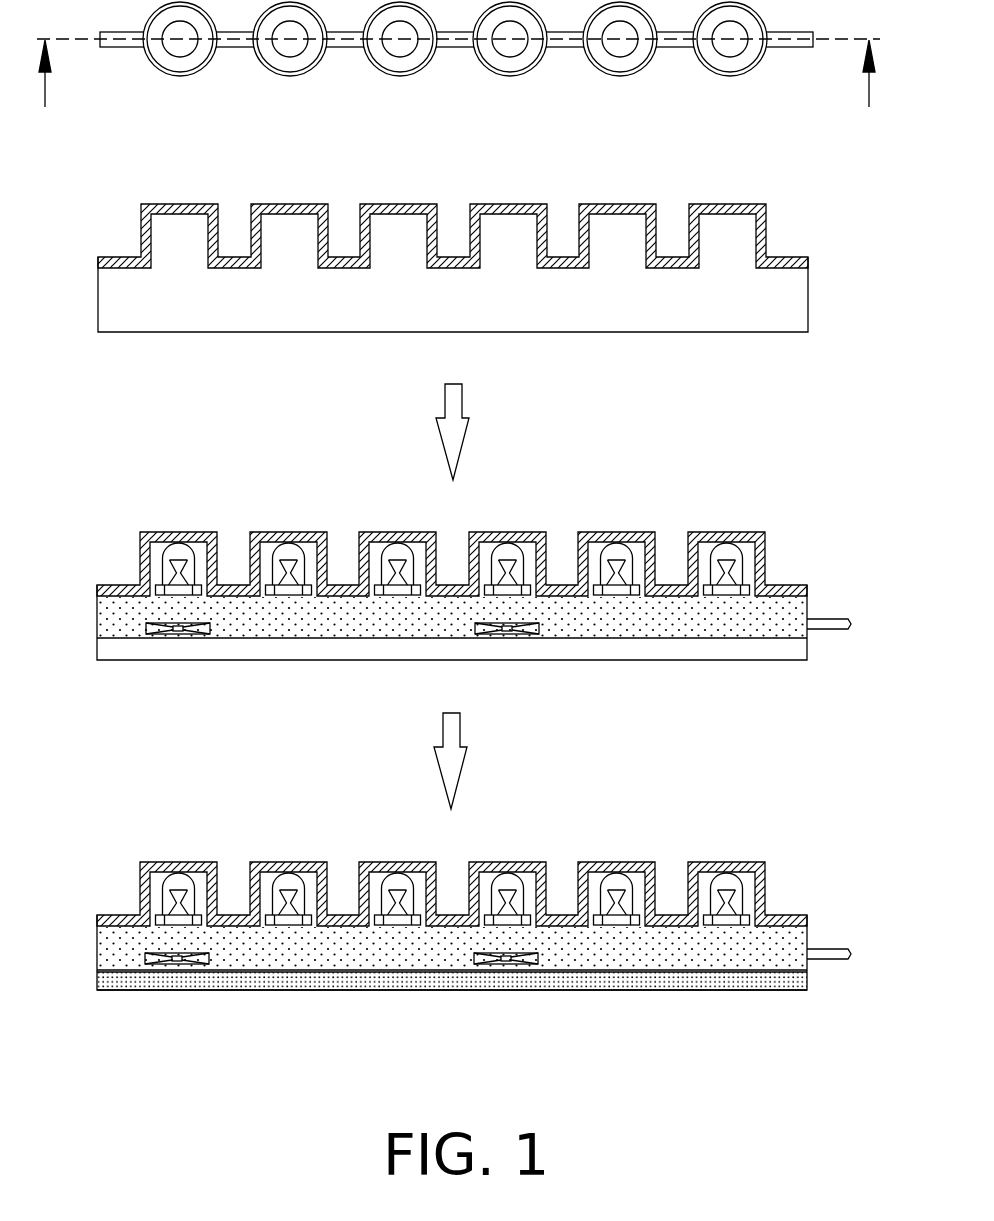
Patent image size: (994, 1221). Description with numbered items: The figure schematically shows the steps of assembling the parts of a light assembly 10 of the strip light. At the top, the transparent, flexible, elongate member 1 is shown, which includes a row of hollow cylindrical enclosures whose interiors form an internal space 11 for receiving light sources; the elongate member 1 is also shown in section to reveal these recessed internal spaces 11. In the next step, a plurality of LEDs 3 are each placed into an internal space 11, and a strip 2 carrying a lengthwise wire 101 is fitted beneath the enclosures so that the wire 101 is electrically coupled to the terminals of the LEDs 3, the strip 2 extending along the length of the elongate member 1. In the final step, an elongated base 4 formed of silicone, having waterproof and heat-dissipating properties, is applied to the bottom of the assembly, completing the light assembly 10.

The elongate member 1 is at (731, 62).
The internal space 11 is at (609, 282).
The strip 2 is at (107, 623).
The LED 3 is at (176, 552).
The elongated base 4 is at (172, 975).
The light assembly 10 is at (620, 1010).
The wire 101 is at (827, 621).